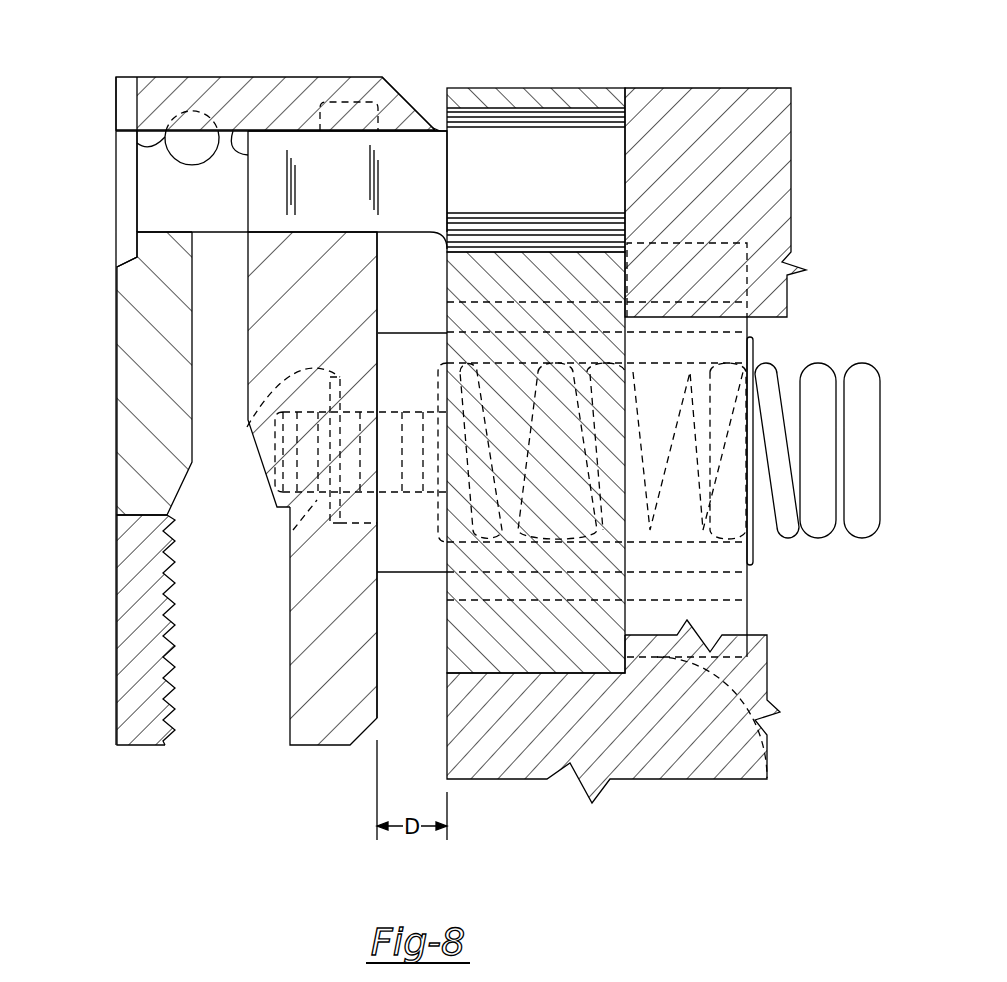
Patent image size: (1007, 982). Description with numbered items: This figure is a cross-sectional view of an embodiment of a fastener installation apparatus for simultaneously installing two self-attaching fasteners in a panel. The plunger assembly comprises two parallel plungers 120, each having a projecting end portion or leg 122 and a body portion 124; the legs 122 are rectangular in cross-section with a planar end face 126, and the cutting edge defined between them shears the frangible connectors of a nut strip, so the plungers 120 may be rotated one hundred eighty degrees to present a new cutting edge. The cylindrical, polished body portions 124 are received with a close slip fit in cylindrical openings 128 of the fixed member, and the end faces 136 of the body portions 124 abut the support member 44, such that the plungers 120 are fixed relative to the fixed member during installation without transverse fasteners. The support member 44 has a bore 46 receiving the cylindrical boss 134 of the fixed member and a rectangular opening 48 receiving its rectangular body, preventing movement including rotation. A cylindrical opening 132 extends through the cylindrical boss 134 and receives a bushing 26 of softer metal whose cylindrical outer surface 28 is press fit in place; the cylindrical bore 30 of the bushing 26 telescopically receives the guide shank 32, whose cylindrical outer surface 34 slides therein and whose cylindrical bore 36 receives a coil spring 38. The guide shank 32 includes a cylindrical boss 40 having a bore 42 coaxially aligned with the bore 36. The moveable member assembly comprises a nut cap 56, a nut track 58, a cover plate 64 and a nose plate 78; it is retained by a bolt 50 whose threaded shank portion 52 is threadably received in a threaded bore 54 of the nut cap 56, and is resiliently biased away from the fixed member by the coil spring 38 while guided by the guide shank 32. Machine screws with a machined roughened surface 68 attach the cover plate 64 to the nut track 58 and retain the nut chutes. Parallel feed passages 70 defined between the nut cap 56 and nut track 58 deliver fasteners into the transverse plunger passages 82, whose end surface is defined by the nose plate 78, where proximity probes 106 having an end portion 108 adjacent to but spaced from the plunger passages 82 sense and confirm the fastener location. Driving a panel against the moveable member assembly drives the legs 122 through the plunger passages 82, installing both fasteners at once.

The bushing 26 is at (738, 590).
The cylindrical outer surface 28 is at (552, 620).
The cylindrical bore 30 is at (447, 605).
The guide shank 32 is at (388, 326).
The cylindrical outer surface 34 is at (418, 345).
The cylindrical bore 36 is at (570, 326).
The coil spring 38 is at (820, 540).
The cylindrical boss 40 is at (247, 427).
The bore 42 is at (293, 530).
The support member 44 is at (700, 775).
The bore 46 is at (767, 778).
The rectangular opening 48 is at (447, 712).
The bolt 50 is at (440, 496).
The threaded shank portion 52 is at (390, 422).
The threaded bore 54 is at (290, 447).
The nut cap 56 is at (317, 723).
The nut track 58 is at (137, 413).
The cover plate 64 is at (127, 630).
The machined roughened surface 68 is at (168, 650).
The feed passages 70 is at (210, 363).
The nose plate 78 is at (232, 85).
The plunger passages 82 is at (162, 202).
The proximity probes 106 is at (140, 147).
The end portion 108 is at (192, 143).
The plungers 120 is at (431, 122).
The projecting end portion 122 is at (352, 187).
The body portion 124 is at (547, 189).
The planar end face 126 is at (240, 137).
The cylindrical openings 128 is at (528, 142).
The cylindrical opening 132 is at (542, 451).
The cylindrical boss 134 is at (748, 320).
The end faces 136 is at (627, 162).